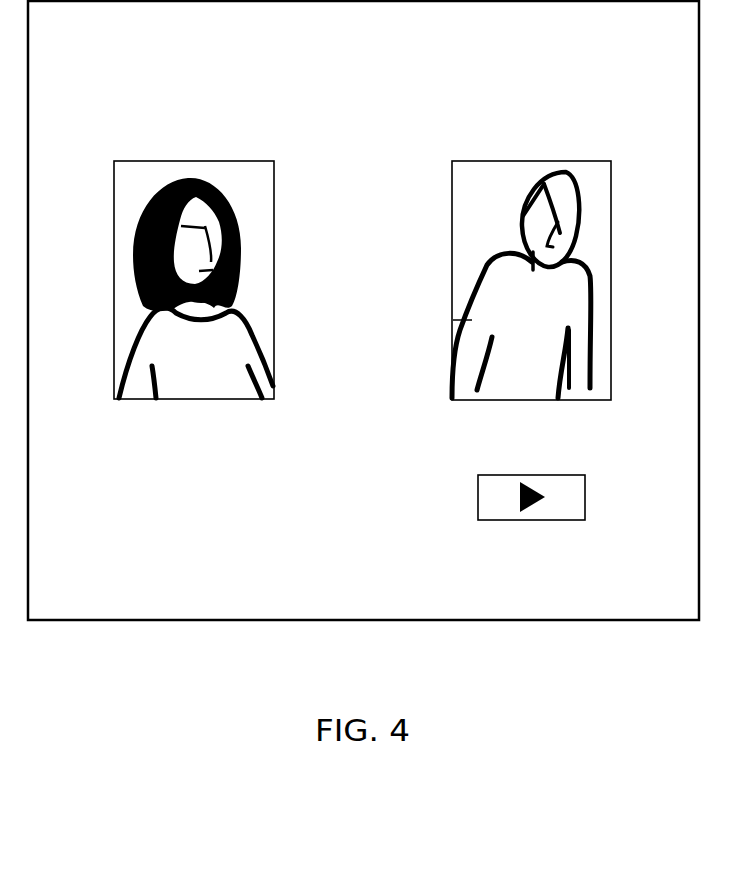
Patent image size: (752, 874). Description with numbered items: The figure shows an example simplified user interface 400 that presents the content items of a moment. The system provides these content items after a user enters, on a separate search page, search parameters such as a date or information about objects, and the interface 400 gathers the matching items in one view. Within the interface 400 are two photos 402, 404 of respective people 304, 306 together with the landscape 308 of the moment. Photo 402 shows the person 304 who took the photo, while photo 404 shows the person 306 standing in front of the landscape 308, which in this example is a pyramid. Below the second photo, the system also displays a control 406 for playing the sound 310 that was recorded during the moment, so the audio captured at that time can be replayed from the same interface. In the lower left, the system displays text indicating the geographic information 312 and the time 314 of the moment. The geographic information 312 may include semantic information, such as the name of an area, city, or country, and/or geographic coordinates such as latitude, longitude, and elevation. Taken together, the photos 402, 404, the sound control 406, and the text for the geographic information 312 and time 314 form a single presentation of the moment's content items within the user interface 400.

The user interface 400 is at (383, 690).
The photo 402 is at (253, 161).
The photo 404 is at (493, 161).
The person 304 is at (188, 178).
The person 306 is at (569, 171).
The landscape 308 is at (567, 252).
The geographic information 312 is at (208, 470).
The time 314 is at (125, 522).
The control 406 is at (569, 475).
The sound 310 is at (519, 500).